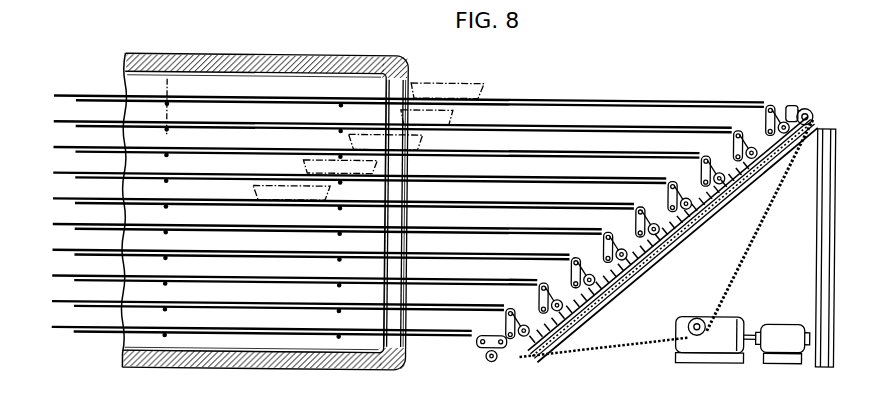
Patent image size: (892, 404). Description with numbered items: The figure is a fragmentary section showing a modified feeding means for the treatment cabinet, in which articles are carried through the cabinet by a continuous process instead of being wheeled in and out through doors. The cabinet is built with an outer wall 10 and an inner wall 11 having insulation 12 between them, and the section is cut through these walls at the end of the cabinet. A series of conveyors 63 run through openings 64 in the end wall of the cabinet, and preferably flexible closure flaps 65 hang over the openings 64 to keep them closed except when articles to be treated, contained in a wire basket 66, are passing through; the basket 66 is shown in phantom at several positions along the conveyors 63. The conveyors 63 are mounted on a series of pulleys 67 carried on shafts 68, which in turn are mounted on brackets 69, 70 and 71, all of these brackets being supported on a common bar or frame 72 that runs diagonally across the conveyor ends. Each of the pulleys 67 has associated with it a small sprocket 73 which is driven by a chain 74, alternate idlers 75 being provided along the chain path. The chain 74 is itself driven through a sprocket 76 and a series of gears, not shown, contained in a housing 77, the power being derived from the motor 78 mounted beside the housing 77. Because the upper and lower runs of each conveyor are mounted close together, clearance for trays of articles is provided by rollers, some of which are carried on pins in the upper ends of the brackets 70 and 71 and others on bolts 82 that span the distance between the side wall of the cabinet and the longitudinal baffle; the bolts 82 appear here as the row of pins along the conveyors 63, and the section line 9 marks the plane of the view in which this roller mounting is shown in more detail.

The section line 9- 9 is at (176, 84).
The outer wall 10 is at (242, 52).
The inner wall 11 is at (270, 350).
The insulation 12 is at (263, 367).
The conveyors 63 is at (510, 95).
The openings 64 is at (407, 78).
The closure flaps 65 is at (382, 74).
The wire basket 66 is at (465, 82).
The pulleys 67 is at (799, 96).
The shafts 68 is at (807, 103).
The bracket 69 is at (818, 122).
The bracket 70 is at (635, 213).
The bracket 71 is at (503, 362).
The bar or frame 72 is at (654, 272).
The small sprocket 73 is at (719, 214).
The chain 74 is at (739, 267).
The idlers 75 is at (702, 238).
The sprocket 76 is at (679, 325).
The housing 77 is at (720, 358).
The motor 78 is at (775, 360).
The bolts 82 is at (170, 127).